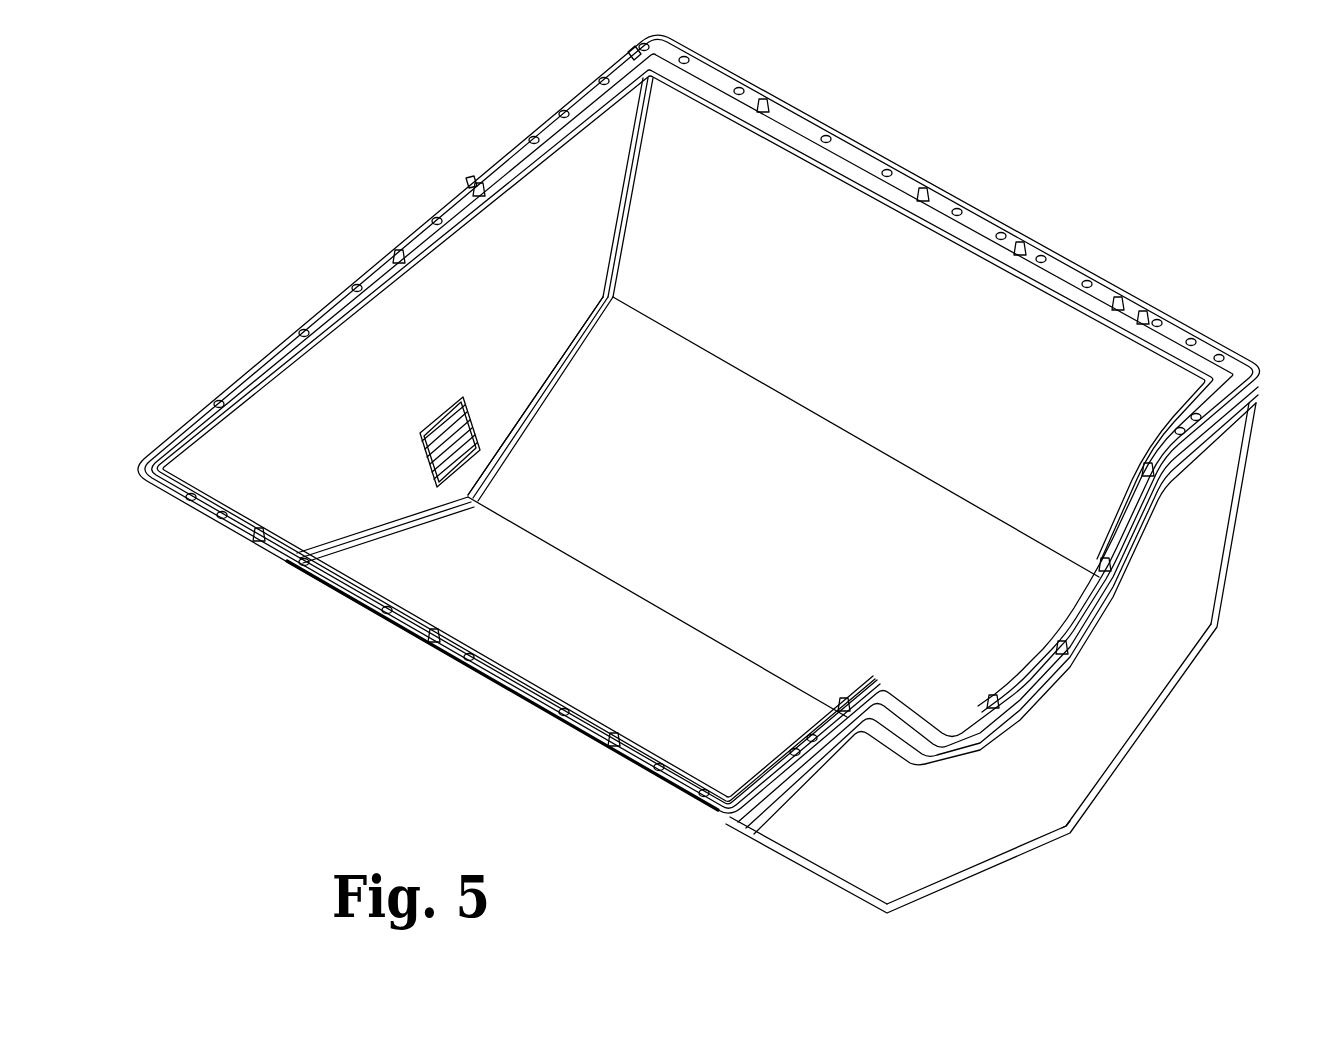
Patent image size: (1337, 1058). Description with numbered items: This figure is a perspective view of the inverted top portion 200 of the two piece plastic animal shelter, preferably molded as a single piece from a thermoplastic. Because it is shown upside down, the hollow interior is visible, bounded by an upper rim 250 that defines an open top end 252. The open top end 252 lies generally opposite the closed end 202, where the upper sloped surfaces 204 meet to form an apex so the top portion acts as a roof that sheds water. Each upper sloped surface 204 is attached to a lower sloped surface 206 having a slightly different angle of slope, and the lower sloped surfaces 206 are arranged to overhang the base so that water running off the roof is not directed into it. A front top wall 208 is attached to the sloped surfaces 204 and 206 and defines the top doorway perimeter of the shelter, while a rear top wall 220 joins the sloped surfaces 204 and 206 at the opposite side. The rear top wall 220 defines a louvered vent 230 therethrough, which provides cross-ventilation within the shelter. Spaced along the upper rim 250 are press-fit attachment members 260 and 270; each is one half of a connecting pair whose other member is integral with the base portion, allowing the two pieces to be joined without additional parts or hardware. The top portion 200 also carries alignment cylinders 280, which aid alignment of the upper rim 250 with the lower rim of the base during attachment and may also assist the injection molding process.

The top portion 200 is at (1122, 152).
The closed end 202 is at (1076, 838).
The upper sloped surface 204 is at (1152, 722).
The lower sloped surface 206 is at (1235, 541).
The front top wall 208 is at (1180, 613).
The rear top wall 220 is at (455, 283).
The louvered vent 230 is at (440, 413).
The upper rim 250 is at (880, 158).
The open top end 252 is at (1080, 252).
The press-fit attachment members 260 is at (716, 62).
The press-fit attachment members 270 is at (770, 100).
The alignment cylinders 280 is at (634, 52).